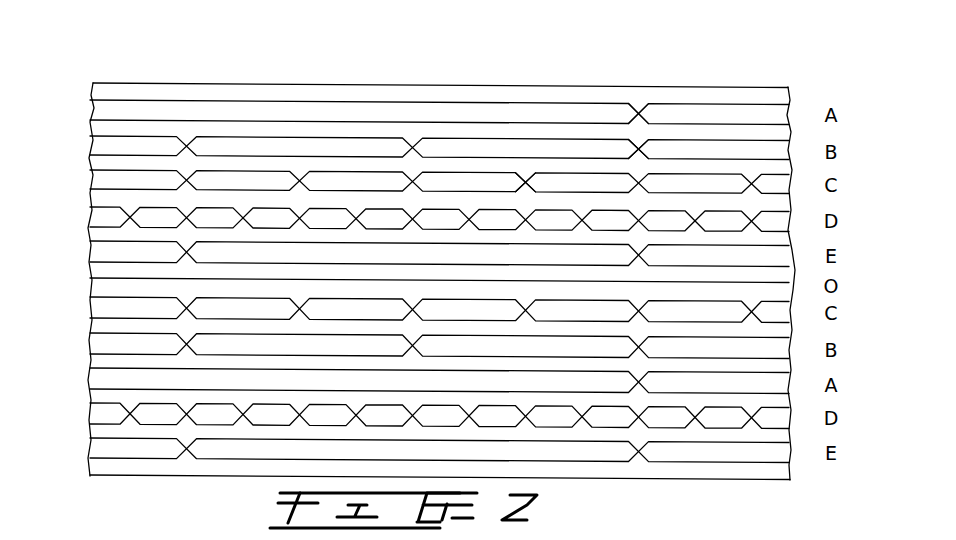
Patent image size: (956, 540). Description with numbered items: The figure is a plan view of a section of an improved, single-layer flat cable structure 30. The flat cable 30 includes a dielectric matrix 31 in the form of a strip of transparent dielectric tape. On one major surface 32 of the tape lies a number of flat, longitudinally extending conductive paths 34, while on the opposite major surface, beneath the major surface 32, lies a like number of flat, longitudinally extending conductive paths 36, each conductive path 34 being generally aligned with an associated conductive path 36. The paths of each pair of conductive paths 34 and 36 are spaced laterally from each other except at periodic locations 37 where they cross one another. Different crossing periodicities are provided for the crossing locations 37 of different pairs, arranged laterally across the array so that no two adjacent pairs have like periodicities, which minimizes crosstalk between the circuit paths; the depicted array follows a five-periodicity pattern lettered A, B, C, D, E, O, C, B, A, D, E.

The flat cable structure 30 is at (410, 255).
The dielectric matrix 31 is at (693, 88).
The major surface 32 is at (750, 98).
The conductive paths 34 is at (283, 172).
The conductive paths 36 is at (89, 99).
The periodic crossing locations 37 is at (532, 173).